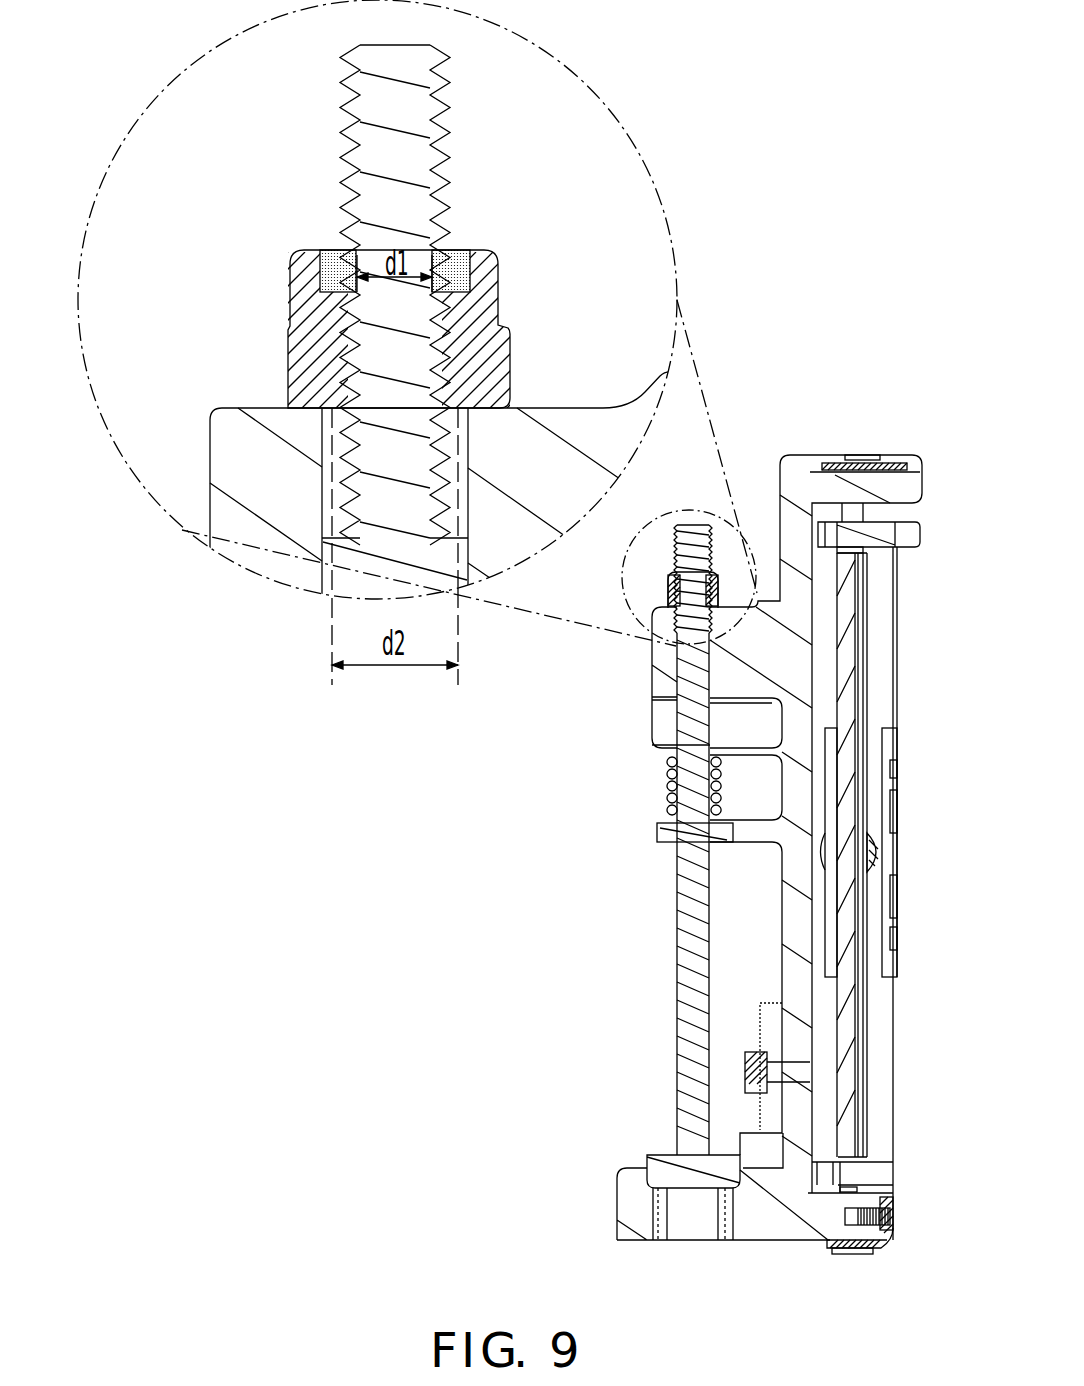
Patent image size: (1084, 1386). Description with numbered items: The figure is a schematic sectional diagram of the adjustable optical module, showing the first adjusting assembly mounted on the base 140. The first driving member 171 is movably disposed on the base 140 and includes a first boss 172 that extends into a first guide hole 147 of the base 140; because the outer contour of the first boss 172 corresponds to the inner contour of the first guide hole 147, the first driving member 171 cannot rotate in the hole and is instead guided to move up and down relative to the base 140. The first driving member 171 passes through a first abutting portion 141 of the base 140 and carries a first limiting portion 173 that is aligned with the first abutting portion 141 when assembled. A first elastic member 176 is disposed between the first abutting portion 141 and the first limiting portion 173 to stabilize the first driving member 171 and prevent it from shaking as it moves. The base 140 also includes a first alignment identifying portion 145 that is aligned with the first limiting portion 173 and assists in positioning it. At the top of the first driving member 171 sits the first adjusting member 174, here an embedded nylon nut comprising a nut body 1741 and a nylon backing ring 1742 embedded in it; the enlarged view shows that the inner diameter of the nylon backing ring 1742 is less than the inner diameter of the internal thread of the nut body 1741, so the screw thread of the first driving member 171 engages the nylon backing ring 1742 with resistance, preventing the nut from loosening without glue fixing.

The base 140 is at (627, 1213).
The first abutting portion 141 is at (667, 664).
The first alignment identifying portion 145 is at (752, 830).
The first guide hole 147 is at (740, 1215).
The first driving member 171 is at (677, 968).
The first boss 172 is at (660, 1165).
The first limiting portion 173 is at (662, 833).
The first adjusting member 174 is at (453, 342).
The nut body 1741 is at (485, 292).
The nylon backing ring 1742 is at (455, 262).
The first elastic member 176 is at (667, 778).